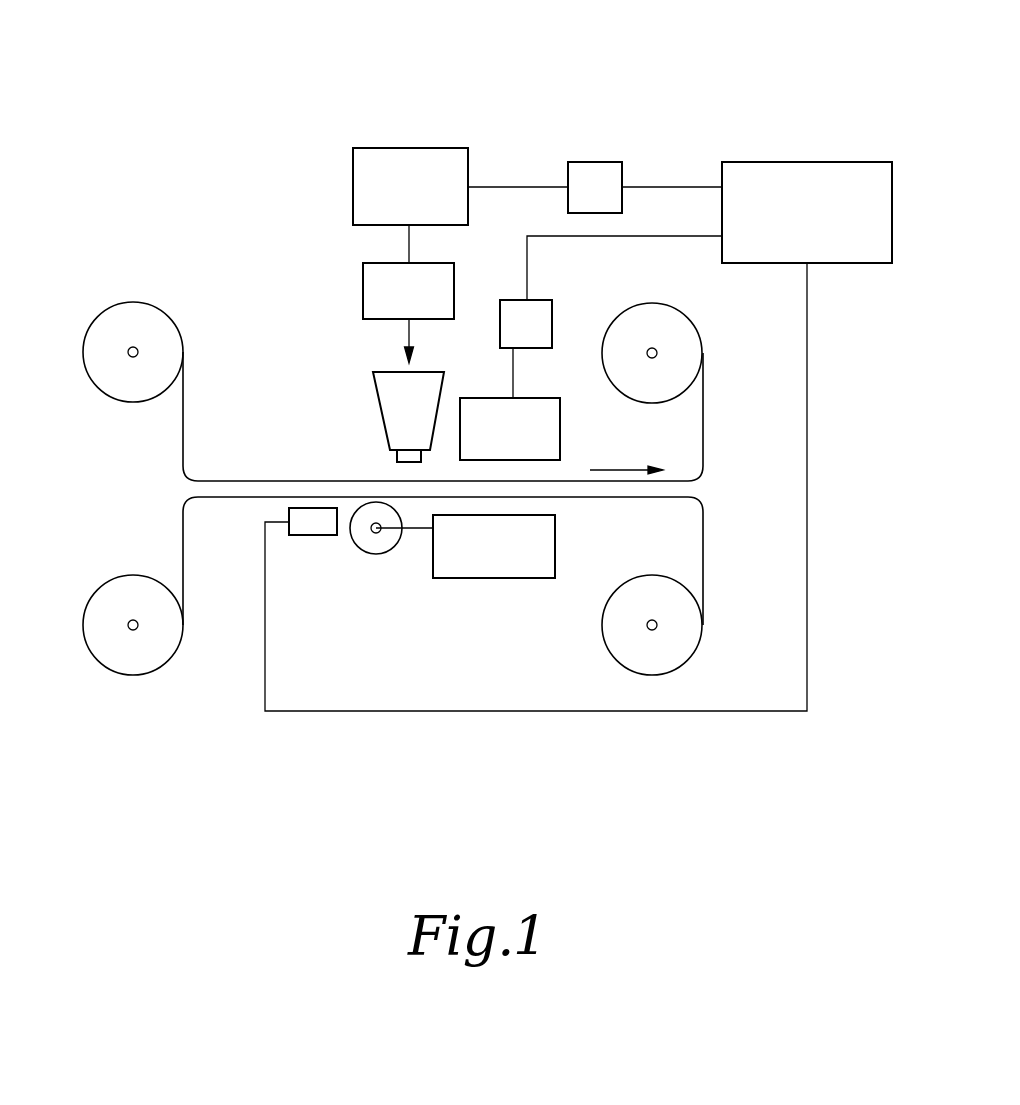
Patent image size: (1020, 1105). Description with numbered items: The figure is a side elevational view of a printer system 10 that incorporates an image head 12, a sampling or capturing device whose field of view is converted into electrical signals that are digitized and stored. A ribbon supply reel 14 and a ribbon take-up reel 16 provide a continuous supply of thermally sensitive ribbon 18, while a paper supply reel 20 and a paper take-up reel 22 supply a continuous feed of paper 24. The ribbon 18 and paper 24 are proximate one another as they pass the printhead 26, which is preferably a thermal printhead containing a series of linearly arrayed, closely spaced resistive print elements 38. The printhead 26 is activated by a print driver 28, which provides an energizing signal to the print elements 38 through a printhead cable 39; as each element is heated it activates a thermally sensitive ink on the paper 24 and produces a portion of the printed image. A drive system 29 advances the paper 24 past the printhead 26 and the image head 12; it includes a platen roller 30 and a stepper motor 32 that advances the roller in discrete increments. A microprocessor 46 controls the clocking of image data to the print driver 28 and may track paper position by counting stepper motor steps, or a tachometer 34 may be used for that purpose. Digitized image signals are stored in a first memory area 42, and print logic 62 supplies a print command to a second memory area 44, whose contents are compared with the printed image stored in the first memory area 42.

The printer system 10 is at (207, 180).
The image head 12 is at (560, 427).
The ribbon supply reel 14 is at (90, 326).
The ribbon take-up reel 16 is at (695, 329).
The thermally sensitive ribbon 18 is at (703, 425).
The paper supply reel 20 is at (92, 655).
The paper take-up reel 22 is at (703, 631).
The paper 24 is at (703, 531).
The printhead 26 is at (377, 392).
The print driver 28 is at (363, 284).
The drive system 29 is at (422, 613).
The platen roller 30 is at (376, 554).
The stepper motor 32 is at (513, 578).
The tachometer 34 is at (310, 535).
The print elements 38 is at (397, 458).
The printhead cable 39 is at (394, 341).
The first memory area 42 is at (545, 300).
The second memory area 44 is at (593, 162).
The microprocessor 46 is at (840, 162).
The print logic 62 is at (436, 148).